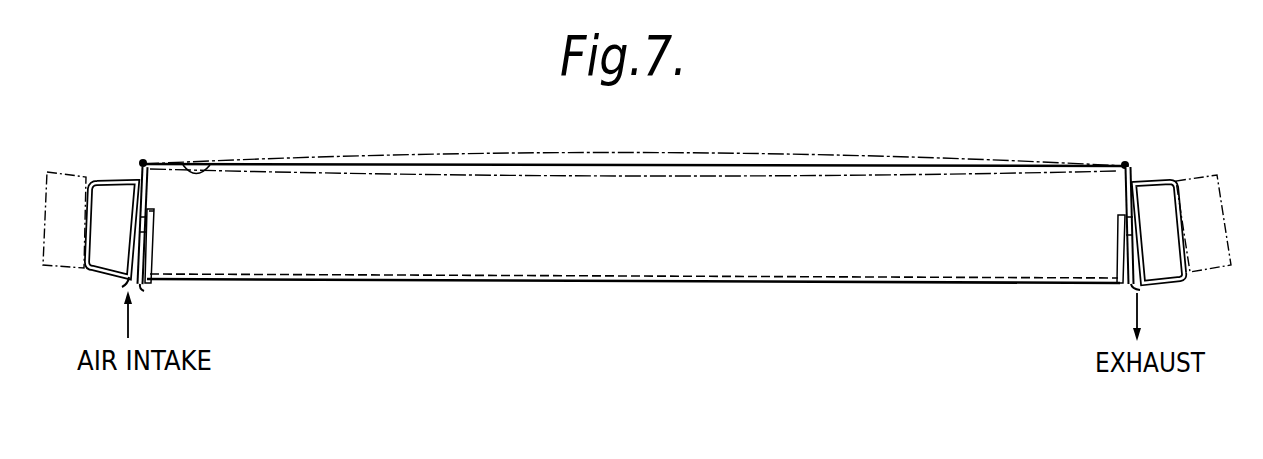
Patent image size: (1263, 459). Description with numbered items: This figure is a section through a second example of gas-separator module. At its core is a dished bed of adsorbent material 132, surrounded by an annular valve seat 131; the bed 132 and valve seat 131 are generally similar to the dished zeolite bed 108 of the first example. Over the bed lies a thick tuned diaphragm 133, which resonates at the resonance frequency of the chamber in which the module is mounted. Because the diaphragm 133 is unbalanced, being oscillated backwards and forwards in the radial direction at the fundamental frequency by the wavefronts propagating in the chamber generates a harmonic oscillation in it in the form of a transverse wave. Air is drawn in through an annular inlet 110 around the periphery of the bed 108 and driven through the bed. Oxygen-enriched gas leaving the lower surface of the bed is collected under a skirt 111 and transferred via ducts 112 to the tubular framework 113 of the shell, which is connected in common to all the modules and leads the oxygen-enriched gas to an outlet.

The dished zeolite bed 108 is at (385, 226).
The annular inlet 110 is at (126, 289).
The skirt 111 is at (287, 281).
The ducts 112 is at (133, 224).
The tubular framework 113 is at (110, 207).
The annular valve seat 131 is at (215, 164).
The dished bed of adsorbent material 132 is at (871, 264).
The thick tuned diaphragm 133 is at (513, 160).